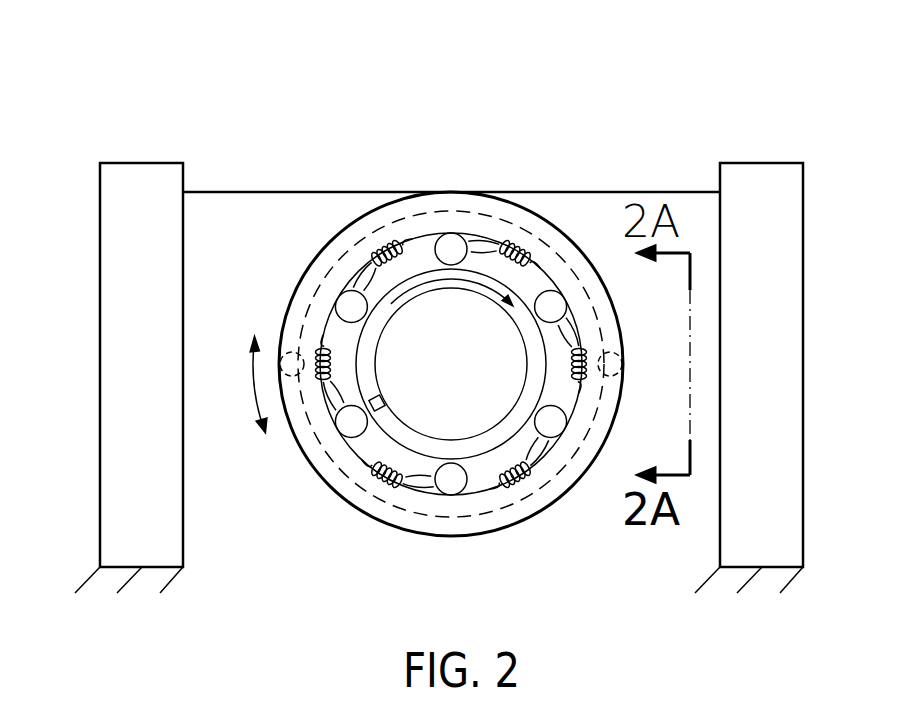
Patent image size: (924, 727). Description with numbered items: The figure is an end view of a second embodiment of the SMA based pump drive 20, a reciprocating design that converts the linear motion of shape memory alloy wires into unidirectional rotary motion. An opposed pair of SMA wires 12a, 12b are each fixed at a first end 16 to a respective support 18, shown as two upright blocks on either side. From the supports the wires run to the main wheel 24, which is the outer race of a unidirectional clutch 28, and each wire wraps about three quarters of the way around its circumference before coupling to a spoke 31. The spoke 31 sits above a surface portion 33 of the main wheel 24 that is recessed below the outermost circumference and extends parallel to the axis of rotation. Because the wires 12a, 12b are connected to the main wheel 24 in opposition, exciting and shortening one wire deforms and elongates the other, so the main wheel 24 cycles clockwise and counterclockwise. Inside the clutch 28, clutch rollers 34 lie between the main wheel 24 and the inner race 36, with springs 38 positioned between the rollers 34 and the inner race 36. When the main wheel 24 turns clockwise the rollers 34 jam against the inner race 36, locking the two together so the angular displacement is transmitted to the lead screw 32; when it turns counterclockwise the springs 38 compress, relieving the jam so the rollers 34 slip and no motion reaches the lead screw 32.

The SMA wire 12a is at (243, 192).
The SMA wire 12b is at (603, 192).
The end of SMA wire 16 is at (168, 192).
The support 18 is at (157, 380).
The SMA based pump drive 20 is at (702, 122).
The main wheel 24 is at (544, 500).
The unidirectional clutch 28 is at (454, 208).
The spoke 31 is at (622, 370).
The lead screw 32 is at (485, 420).
The surface portion 33 is at (302, 300).
The clutch rollers 34 is at (449, 487).
The inner race 36 is at (372, 330).
The springs 38 is at (378, 246).